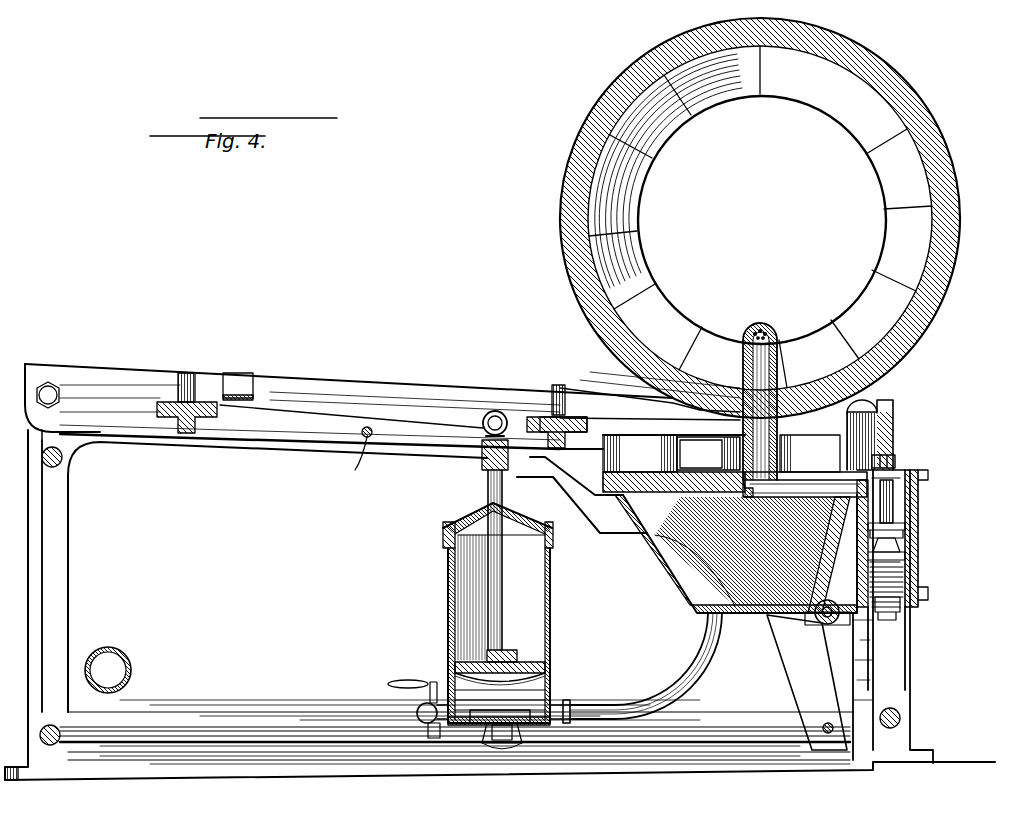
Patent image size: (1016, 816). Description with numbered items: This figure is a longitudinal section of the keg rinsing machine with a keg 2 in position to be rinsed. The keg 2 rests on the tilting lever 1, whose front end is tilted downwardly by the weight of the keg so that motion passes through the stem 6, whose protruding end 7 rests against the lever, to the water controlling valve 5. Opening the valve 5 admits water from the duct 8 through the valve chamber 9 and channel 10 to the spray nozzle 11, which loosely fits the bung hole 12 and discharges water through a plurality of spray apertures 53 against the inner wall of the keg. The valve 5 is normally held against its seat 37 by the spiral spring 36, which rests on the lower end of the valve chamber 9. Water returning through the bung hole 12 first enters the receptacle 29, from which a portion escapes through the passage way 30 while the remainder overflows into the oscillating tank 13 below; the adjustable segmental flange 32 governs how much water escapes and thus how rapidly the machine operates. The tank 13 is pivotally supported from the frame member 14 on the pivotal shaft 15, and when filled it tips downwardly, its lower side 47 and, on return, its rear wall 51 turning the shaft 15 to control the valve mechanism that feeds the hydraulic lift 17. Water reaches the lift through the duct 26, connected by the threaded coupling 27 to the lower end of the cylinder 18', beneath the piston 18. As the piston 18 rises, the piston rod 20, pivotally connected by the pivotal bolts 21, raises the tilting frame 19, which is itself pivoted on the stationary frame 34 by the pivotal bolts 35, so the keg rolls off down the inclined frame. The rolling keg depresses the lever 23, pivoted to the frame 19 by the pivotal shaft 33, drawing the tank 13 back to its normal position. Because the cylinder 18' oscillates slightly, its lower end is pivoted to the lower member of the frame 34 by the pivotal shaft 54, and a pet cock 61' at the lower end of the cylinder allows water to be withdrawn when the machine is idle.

The tilting lever 1 is at (868, 405).
The keg 2 is at (760, 218).
The water controlling valve 5 is at (905, 549).
The stem 6 is at (893, 507).
The protruding end 7 is at (895, 458).
The duct 8 is at (125, 658).
The valve chamber 9 is at (905, 520).
The channel 10 is at (770, 498).
The spray nozzle 11 is at (778, 355).
The bung hole 12 is at (805, 388).
The oscillating tank 13 is at (680, 528).
The frame member 14 is at (807, 682).
The pivotal shaft 15 is at (812, 622).
The hydraulic lift 17 is at (530, 690).
The piston 18 is at (500, 651).
The cylinder 18' is at (481, 614).
The tilting frame 19 is at (382, 406).
The piston rod 20 is at (503, 585).
The pivotal bolts 21 is at (505, 418).
The lever 23 is at (242, 387).
The duct 26 is at (695, 668).
The threaded coupling 27 is at (560, 705).
The receptacle 29 is at (810, 453).
The passage way 30 is at (640, 453).
The segmental flange 32 is at (708, 453).
The pivotal shaft 33 is at (351, 460).
The stationary frame 34 is at (60, 512).
The pivotal bolts 35 is at (45, 408).
The spiral spring 36 is at (920, 570).
The seat 37 is at (925, 542).
The lower side 47 is at (760, 615).
The rear wall 51 is at (820, 555).
The spray apertures 53 is at (766, 330).
The pivotal shaft 54 is at (506, 738).
The pet cock 61' is at (394, 708).